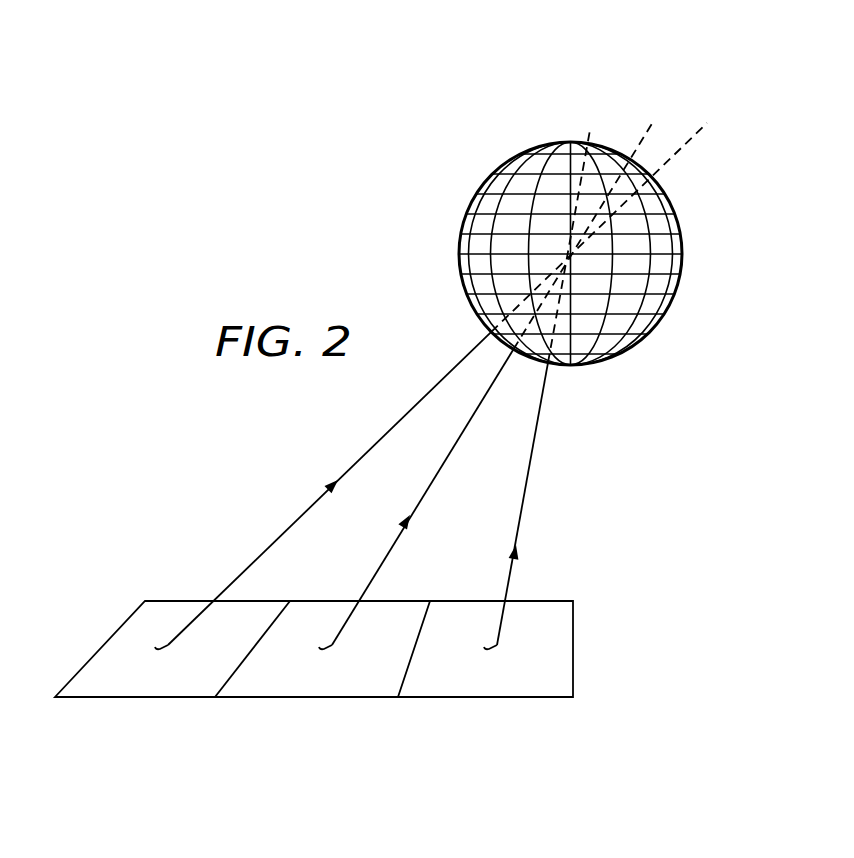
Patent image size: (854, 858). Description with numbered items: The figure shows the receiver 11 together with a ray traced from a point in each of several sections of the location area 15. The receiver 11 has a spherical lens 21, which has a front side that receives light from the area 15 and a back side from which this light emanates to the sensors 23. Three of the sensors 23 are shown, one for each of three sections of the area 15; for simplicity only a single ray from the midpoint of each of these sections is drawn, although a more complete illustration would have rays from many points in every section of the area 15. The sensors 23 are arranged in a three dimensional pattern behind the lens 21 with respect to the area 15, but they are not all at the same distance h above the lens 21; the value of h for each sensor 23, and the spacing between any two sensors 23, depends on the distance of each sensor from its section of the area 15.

The receiver 11 is at (452, 117).
The spherical lens 21 is at (472, 202).
The area 15 is at (596, 644).
The sensors 23 is at (743, 138).